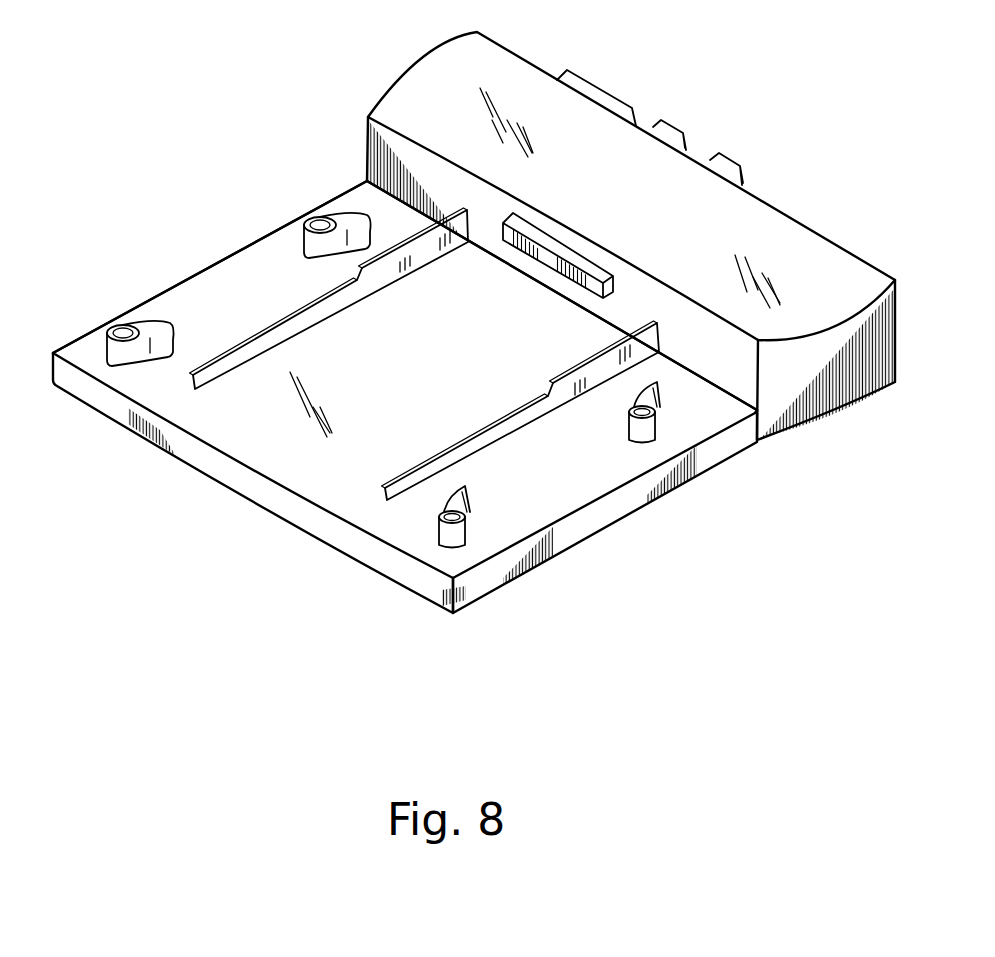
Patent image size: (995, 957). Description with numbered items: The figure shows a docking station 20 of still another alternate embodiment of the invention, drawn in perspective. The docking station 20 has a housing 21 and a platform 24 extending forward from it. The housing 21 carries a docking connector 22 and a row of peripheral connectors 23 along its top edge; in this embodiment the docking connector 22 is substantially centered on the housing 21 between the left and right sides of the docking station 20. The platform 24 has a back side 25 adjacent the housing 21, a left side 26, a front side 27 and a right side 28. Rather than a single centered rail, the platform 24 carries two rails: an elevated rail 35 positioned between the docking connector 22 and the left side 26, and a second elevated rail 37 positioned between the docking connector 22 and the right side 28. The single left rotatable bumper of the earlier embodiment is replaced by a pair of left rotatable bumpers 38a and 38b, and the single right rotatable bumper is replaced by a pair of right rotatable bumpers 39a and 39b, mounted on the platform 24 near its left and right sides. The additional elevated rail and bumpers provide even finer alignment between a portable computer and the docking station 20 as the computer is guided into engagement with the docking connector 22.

The docking station 20 is at (326, 70).
The housing 21 is at (833, 243).
The docking connector 22 is at (588, 265).
The peripheral connectors 23 is at (735, 172).
The platform 24 is at (424, 424).
The back side 25 is at (580, 308).
The left side 26 is at (183, 280).
The front side 27 is at (258, 500).
The right side 28 is at (712, 452).
The elevated rail 35 is at (407, 260).
The second elevated rail 37 is at (650, 345).
The left rotatable bumper 38a is at (118, 358).
The left rotatable bumper 38b is at (320, 253).
The right rotatable bumper 39a is at (463, 533).
The right rotatable bumper 39b is at (633, 430).